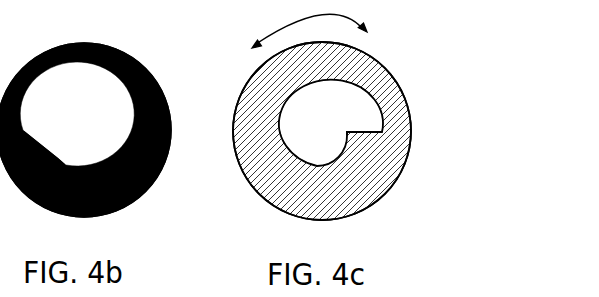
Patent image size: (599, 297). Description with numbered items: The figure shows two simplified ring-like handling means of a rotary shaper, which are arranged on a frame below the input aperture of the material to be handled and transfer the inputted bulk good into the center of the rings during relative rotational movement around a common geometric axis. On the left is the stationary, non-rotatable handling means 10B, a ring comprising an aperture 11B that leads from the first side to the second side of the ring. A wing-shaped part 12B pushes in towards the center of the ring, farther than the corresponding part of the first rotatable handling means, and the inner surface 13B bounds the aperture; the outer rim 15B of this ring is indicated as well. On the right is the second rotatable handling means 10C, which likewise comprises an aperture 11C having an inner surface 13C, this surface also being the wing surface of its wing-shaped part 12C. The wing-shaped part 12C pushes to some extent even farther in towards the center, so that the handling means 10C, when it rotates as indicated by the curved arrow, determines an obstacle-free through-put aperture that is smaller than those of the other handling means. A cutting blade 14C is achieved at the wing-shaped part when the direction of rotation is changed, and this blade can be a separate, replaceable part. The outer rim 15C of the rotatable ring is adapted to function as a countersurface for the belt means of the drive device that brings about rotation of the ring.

In FIG. 4b, the stationary handling means 10B is at (127, 55).
In FIG. 4b, the aperture 11B is at (108, 150).
In FIG. 4b, the wing-shaped part 12B is at (41, 145).
In FIG. 4b, the inner surface of opening 13B is at (33, 99).
In FIG. 4b, the outer surface 15B is at (108, 215).
In FIG. 4c, the second rotatable handling means 10C is at (373, 72).
In FIG. 4c, the aperture 11C is at (345, 139).
In FIG. 4c, the wing-shaped part 12C is at (365, 141).
In FIG. 4c, the wing surface 13C is at (287, 104).
In FIG. 4c, the cutting blade 14C is at (347, 132).
In FIG. 4c, the outer rim 15C is at (267, 205).